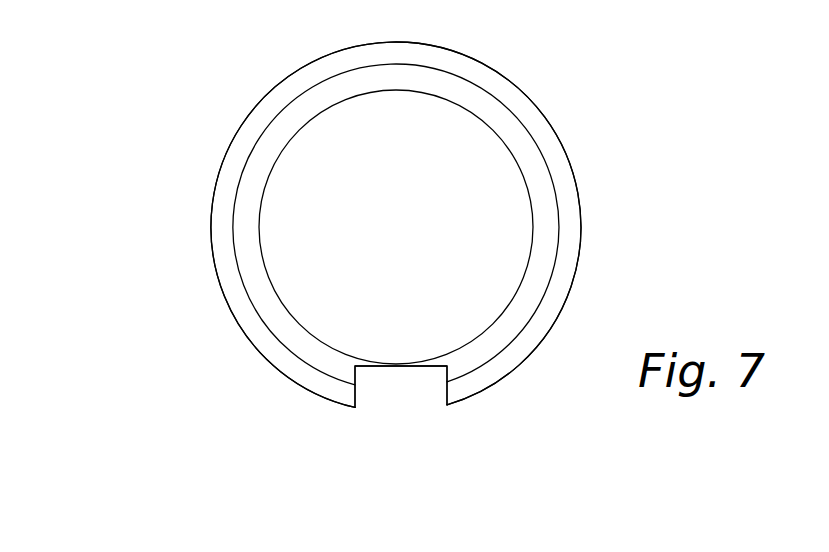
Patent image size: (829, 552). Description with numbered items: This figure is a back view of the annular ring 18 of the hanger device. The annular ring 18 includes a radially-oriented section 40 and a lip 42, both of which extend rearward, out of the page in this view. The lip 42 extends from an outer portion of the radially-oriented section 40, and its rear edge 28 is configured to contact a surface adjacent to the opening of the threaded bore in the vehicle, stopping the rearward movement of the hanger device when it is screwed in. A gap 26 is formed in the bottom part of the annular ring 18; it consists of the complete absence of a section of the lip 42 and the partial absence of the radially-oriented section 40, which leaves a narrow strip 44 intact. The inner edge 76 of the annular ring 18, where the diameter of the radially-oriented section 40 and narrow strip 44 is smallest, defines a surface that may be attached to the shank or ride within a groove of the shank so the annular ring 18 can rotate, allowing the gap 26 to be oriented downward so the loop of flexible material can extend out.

The annular ring 18 is at (128, 319).
The gap 26 is at (400, 424).
The rear edge 28 is at (522, 103).
The radially-oriented section 40 is at (300, 112).
The lip 42 is at (210, 207).
The narrow strip 44 is at (398, 362).
The inner edge 76 is at (531, 216).